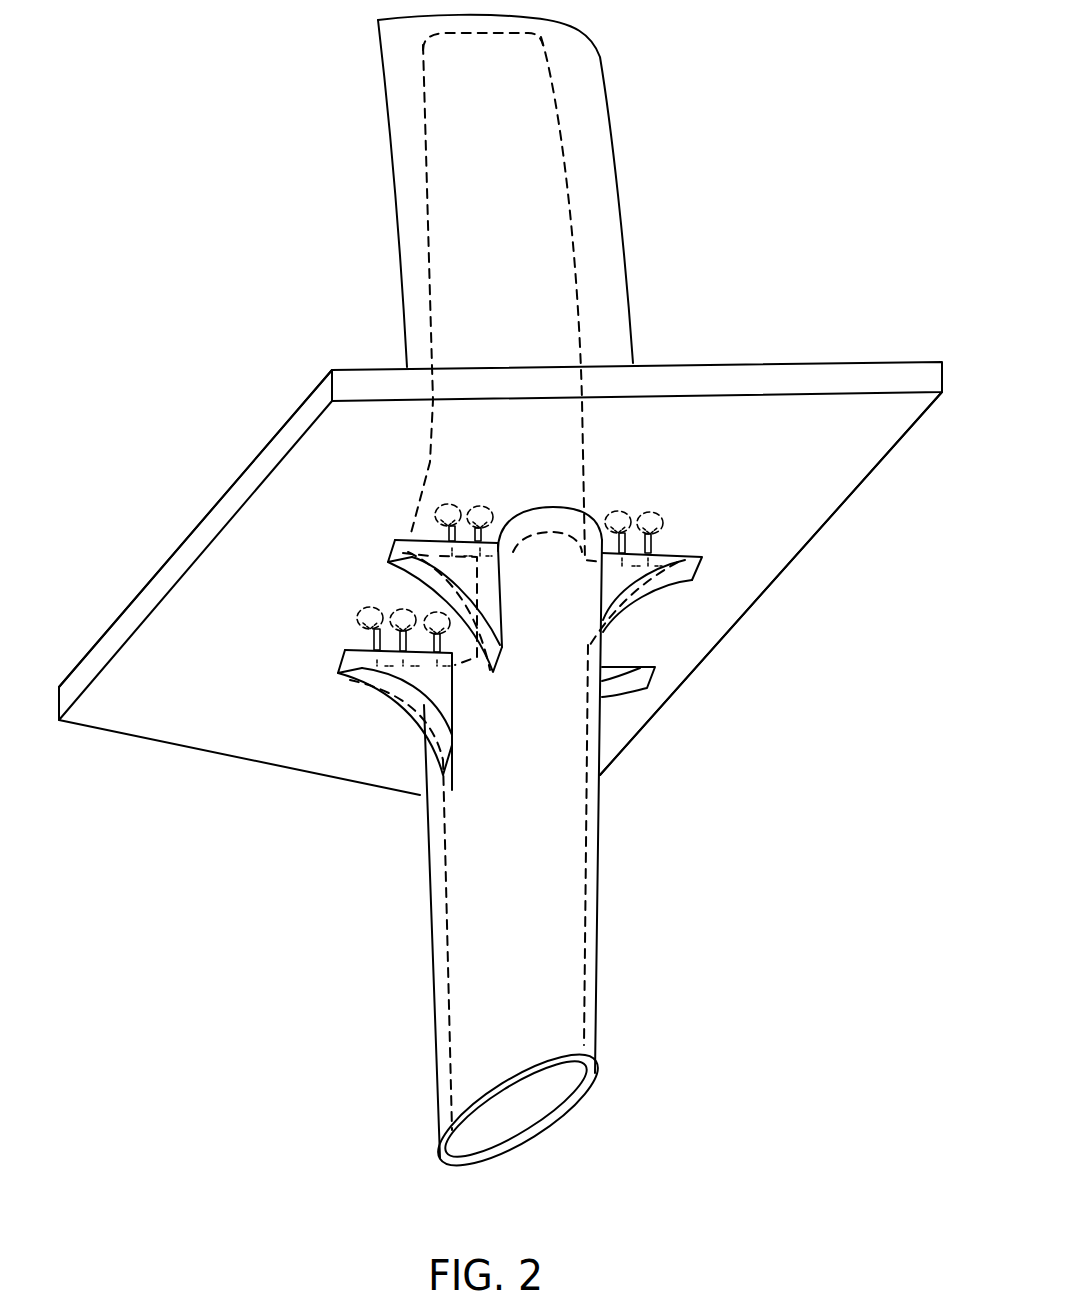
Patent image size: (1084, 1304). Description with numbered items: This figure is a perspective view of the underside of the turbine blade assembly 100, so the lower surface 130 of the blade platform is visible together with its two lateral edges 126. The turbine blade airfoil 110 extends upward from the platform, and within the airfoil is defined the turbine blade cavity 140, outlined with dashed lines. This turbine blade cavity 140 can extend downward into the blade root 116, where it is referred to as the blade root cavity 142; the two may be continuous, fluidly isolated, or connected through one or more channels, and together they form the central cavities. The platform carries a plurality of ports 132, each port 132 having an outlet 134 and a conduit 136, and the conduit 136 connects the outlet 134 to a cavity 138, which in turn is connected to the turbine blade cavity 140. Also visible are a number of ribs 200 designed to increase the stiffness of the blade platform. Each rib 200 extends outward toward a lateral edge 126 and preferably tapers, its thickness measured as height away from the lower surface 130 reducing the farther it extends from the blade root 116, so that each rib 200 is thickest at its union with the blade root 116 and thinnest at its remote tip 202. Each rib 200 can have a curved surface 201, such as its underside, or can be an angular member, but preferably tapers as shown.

The turbine blade assembly 100 is at (221, 199).
The turbine blade airfoil 110 is at (407, 108).
The blade root 116 is at (600, 920).
The lateral edges 126 is at (197, 538).
The lower surface 130 is at (120, 720).
The ports 132 is at (339, 569).
The outlet 134 is at (357, 620).
The conduit 136 is at (347, 655).
The cavity 138 is at (407, 702).
The turbine blade cavity 140 is at (543, 167).
The blade root cavity 142 is at (547, 843).
The ribs 200 is at (417, 722).
The curved surface 201 is at (395, 540).
The remote tip 202 is at (407, 515).